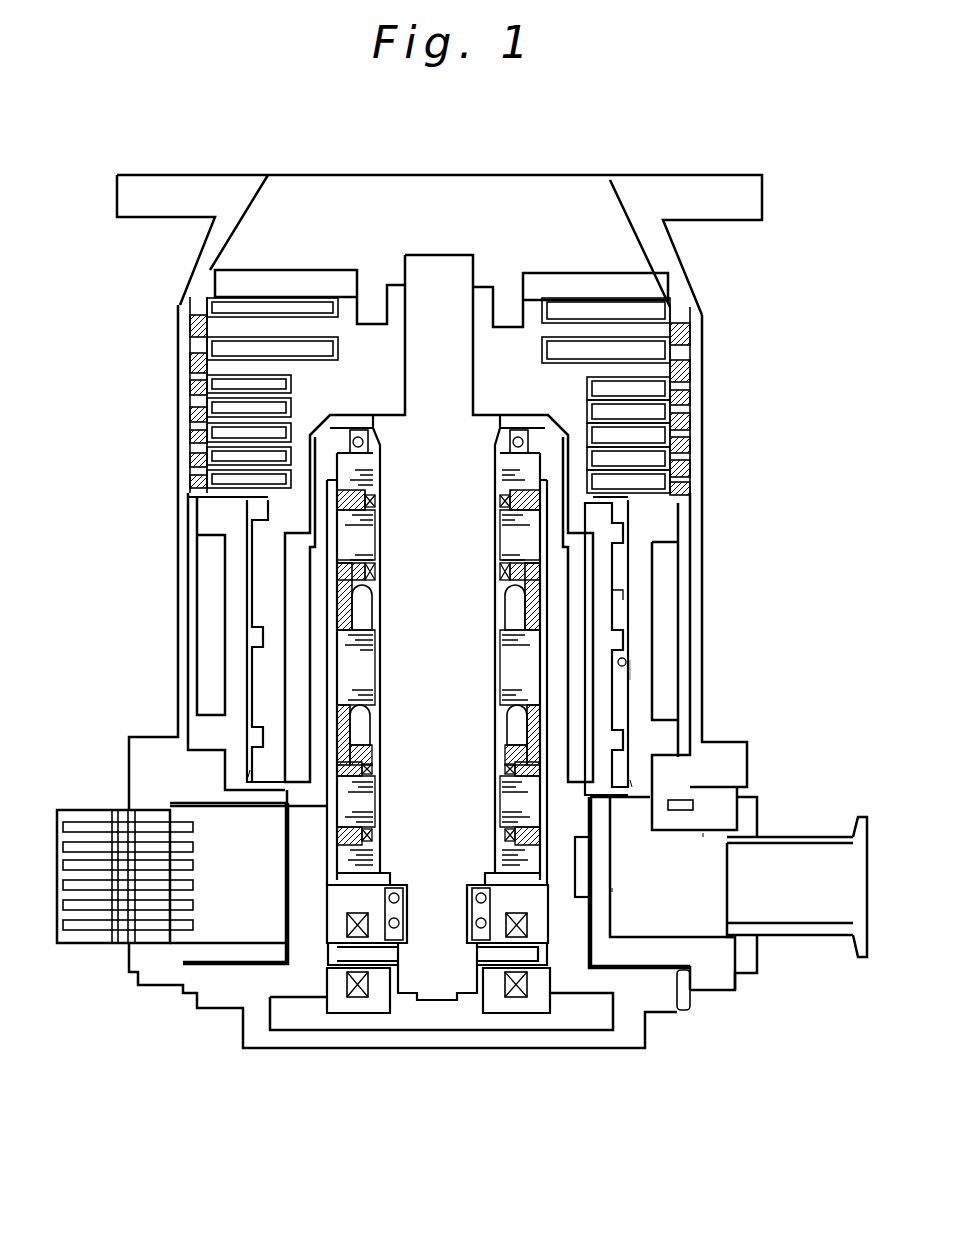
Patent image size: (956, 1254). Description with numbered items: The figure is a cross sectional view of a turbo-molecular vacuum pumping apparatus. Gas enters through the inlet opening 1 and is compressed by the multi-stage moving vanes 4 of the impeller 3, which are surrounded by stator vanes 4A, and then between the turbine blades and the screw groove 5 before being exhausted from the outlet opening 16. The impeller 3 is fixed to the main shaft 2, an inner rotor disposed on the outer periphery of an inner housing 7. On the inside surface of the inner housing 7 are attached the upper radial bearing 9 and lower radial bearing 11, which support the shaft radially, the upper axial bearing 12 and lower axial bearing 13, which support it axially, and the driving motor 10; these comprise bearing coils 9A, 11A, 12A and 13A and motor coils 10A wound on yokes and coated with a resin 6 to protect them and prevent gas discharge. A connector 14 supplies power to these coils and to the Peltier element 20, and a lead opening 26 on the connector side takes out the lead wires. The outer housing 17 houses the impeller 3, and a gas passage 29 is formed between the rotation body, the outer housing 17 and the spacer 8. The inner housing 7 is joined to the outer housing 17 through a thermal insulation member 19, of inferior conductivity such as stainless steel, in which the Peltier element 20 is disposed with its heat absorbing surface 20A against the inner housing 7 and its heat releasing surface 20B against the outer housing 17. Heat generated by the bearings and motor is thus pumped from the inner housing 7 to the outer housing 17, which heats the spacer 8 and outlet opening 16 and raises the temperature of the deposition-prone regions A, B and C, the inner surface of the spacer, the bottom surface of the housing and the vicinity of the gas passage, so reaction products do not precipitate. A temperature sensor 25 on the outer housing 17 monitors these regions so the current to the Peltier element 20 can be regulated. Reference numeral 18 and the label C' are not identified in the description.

The inlet opening 1 is at (335, 190).
The main shaft 2 is at (460, 268).
The impeller 3 is at (526, 386).
The moving vanes 4 is at (660, 371).
The stator vanes 4A is at (688, 400).
The screw groove 5 is at (620, 537).
The resin 6 is at (366, 583).
The inner housing 7 is at (567, 577).
The spacer 8 is at (643, 672).
The upper radial bearing 9 is at (360, 545).
The bearing coil 9A is at (368, 500).
The driving motor 10 is at (360, 678).
The motor coil 10A is at (362, 612).
The lower radial bearing 11 is at (360, 798).
The bearing coil 11A is at (366, 768).
The upper axial bearing 12 is at (335, 905).
The bearing coil 12A is at (365, 928).
The lower axial bearing 13 is at (373, 1005).
The bearing coil 13A is at (513, 1005).
The connector 14 is at (88, 818).
The outlet opening 16 is at (825, 855).
The outer housing 17 is at (730, 978).
The housing 18 is at (697, 580).
The thermal insulation member 19 is at (683, 1012).
The Peltier element 20 is at (580, 838).
The heat absorbing surface 20A is at (505, 833).
The heat releasing surface 20B is at (593, 850).
The temperature sensor 25 is at (698, 805).
The lead opening 26 is at (285, 895).
The gas passage 29 is at (618, 595).
The inner surface of the spacer A is at (626, 658).
The bottom surface of the housing B is at (248, 777).
The gas passage region C is at (702, 870).
The space C' is at (640, 894).